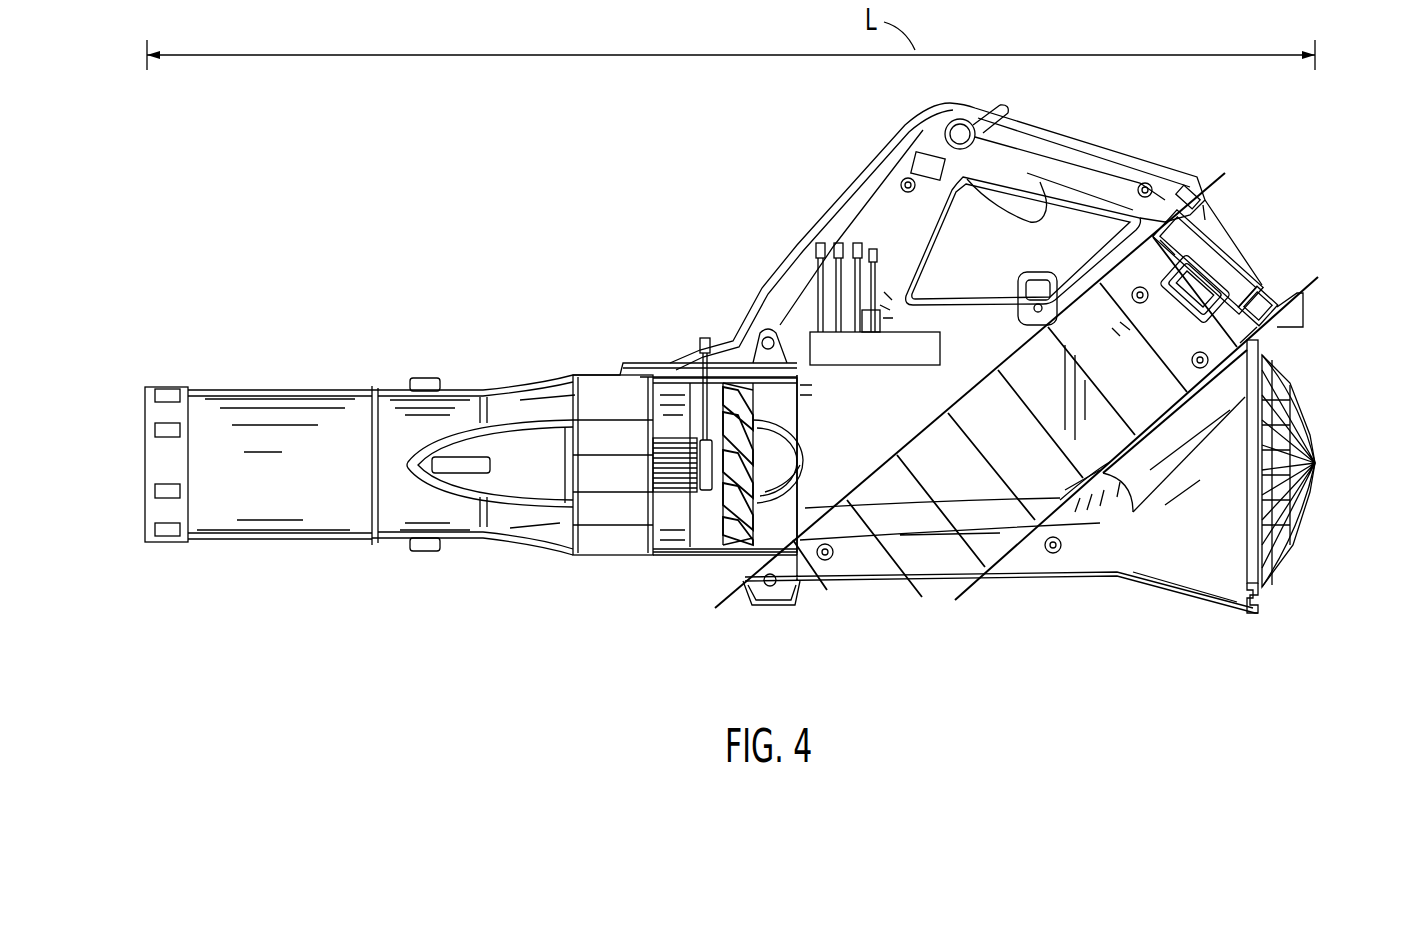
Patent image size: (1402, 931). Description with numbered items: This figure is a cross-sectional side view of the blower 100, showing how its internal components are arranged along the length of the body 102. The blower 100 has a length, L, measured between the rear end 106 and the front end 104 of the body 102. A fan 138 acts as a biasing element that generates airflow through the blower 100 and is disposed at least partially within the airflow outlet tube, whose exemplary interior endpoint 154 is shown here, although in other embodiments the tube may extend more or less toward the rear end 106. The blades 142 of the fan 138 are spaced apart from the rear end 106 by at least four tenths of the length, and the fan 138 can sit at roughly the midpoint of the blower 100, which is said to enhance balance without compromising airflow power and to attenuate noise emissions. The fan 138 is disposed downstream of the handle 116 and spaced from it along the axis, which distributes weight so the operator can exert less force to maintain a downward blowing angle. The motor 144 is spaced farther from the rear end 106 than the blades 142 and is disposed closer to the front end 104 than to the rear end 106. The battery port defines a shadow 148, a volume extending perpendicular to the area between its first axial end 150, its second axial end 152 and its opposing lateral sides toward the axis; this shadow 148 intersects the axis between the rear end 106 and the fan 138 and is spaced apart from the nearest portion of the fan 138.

The blower 100 is at (447, 218).
The body 102 is at (800, 241).
The front end 104 is at (125, 396).
The rear end 106 is at (1322, 463).
The handle 116 is at (1050, 158).
The fan 138 is at (775, 505).
The blades 142 is at (740, 550).
The motor 144 is at (672, 500).
The shadow 148 is at (1133, 515).
The first axial end 150 is at (1200, 180).
The second axial end 152 is at (1303, 297).
The interior endpoint 154 is at (797, 413).